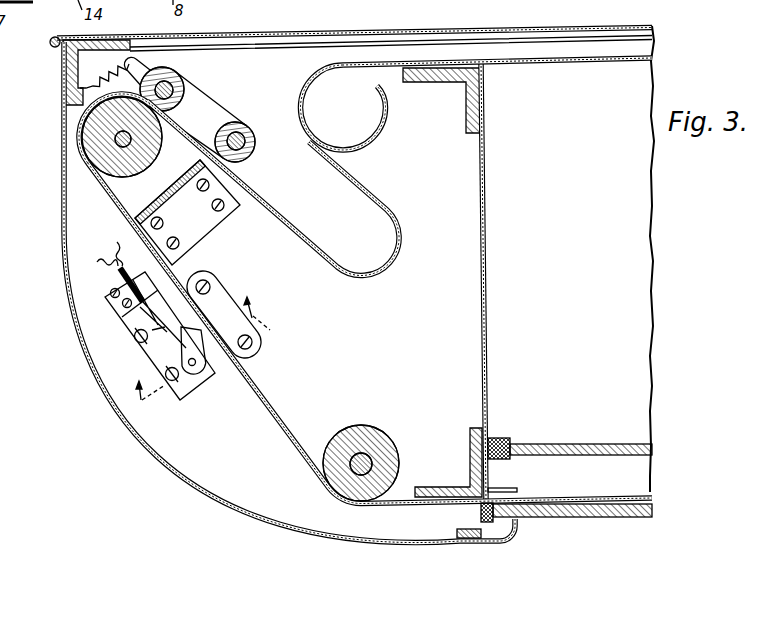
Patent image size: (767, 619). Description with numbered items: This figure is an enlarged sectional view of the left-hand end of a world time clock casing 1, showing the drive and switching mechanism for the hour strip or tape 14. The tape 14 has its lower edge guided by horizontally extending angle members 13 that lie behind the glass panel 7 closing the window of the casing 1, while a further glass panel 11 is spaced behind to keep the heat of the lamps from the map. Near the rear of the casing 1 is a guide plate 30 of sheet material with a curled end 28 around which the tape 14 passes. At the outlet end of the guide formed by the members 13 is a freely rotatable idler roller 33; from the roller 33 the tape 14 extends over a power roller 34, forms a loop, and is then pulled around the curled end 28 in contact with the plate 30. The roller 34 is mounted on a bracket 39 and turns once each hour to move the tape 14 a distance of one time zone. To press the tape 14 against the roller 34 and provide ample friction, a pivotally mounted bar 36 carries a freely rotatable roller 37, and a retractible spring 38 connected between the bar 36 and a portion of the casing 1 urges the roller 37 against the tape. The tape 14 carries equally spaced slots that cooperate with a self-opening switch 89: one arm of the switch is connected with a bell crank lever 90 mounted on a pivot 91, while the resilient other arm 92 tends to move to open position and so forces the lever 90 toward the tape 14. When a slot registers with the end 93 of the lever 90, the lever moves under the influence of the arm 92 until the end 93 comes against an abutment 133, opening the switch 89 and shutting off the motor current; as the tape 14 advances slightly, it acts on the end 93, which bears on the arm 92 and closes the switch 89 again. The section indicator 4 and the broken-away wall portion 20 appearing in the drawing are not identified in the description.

The casing 1 is at (167, 470).
The section line 4- 4 is at (200, 354).
The glass panel 7 is at (602, 514).
The glass panel 11 is at (587, 442).
The angle members 13 is at (433, 484).
The hour strip or tape 14 is at (588, 495).
The wall (broken away) 20 is at (637, 248).
The curled end 28 is at (383, 123).
The guide plate 30 is at (601, 60).
The idler roller 33 is at (372, 425).
The power roller 34 is at (391, 266).
The pivotally mounted bar 36 is at (206, 115).
The roller 37 is at (185, 86).
The retractible spring 38 is at (104, 74).
The bracket 39 is at (202, 228).
The switch 89 is at (125, 275).
The bell crank lever 90 is at (233, 362).
The pivot 91 is at (203, 368).
The arm 92 is at (162, 313).
The end of lever 93 is at (200, 318).
The abutment 133 is at (222, 331).